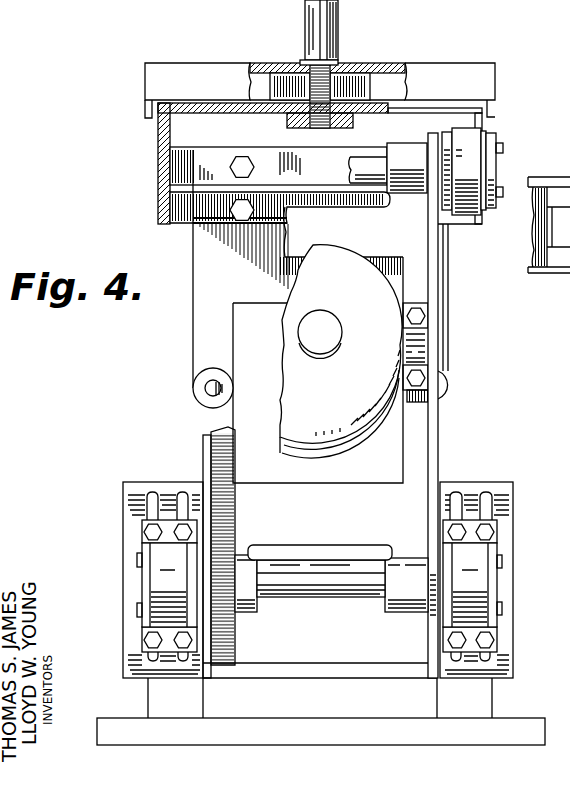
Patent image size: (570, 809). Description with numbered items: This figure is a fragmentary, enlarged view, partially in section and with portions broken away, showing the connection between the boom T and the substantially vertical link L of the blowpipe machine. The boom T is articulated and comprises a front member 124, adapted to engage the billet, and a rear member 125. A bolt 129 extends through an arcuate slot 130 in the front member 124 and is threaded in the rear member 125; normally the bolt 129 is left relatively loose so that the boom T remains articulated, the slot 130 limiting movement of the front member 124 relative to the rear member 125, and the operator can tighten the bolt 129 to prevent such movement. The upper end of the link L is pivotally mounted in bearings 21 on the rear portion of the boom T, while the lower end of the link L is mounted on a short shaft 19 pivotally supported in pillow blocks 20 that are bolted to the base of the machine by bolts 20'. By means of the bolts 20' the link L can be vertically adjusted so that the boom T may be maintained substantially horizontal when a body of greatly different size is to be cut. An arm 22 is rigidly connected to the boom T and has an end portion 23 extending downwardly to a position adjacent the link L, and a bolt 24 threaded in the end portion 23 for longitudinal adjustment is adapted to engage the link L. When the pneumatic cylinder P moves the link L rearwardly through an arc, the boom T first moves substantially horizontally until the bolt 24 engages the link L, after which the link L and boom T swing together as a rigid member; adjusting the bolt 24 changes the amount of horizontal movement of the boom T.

The front member 124 is at (188, 70).
The bolt 129 is at (314, 24).
The arcuate slot 130 is at (347, 66).
The boom T is at (158, 153).
The rear member 125 is at (158, 197).
The arm 22 is at (198, 257).
The end portion 23 is at (200, 353).
The bolt 24 is at (206, 388).
The pneumatic cylinder P is at (373, 303).
The bearings 21 is at (463, 153).
The link L is at (432, 423).
The pillow blocks 20 is at (323, 585).
The bolts 20' is at (322, 576).
The short shaft 19 is at (325, 583).